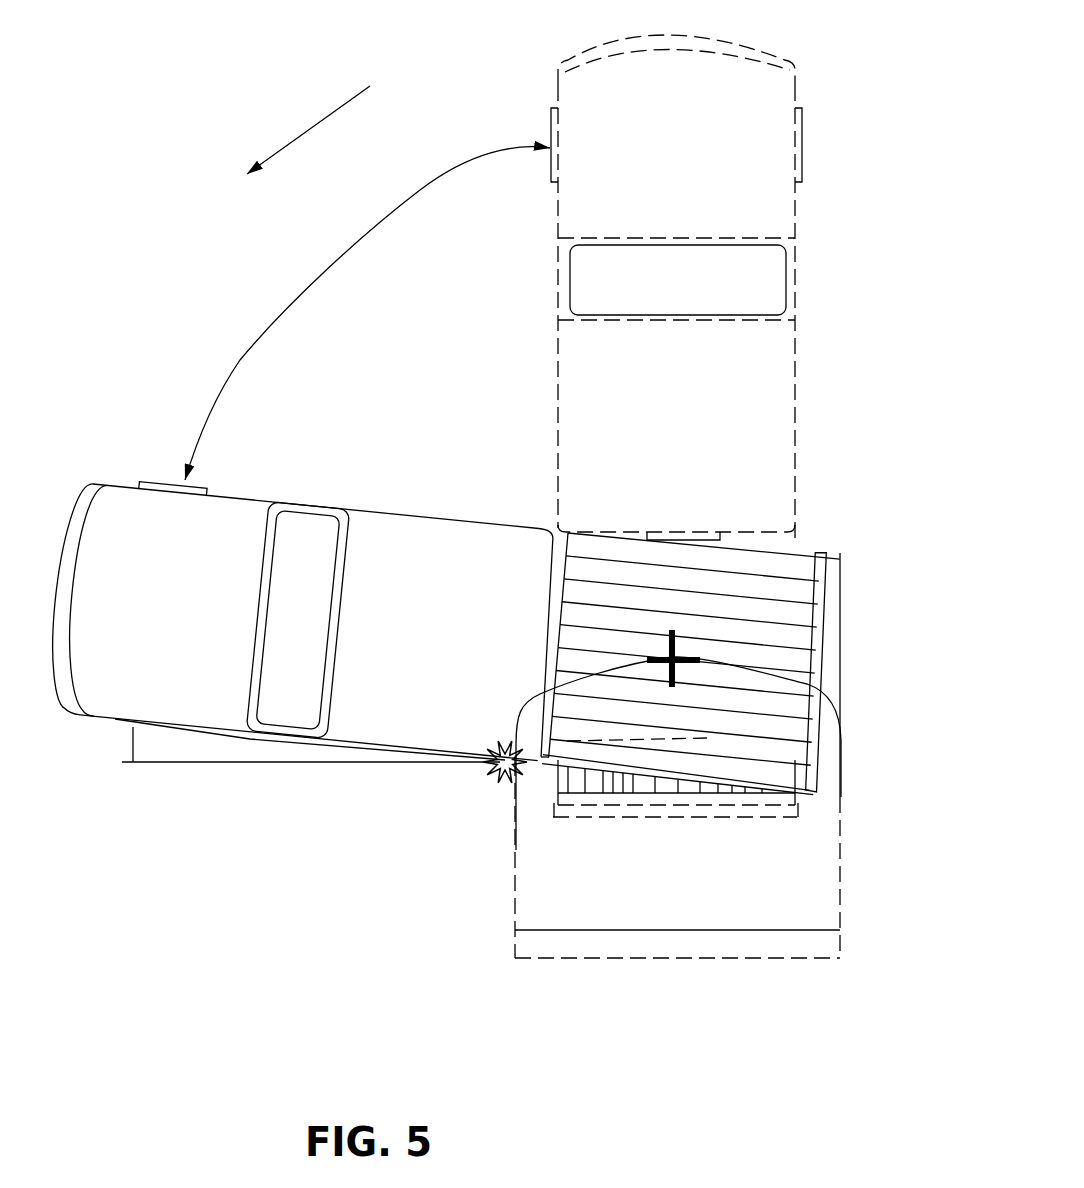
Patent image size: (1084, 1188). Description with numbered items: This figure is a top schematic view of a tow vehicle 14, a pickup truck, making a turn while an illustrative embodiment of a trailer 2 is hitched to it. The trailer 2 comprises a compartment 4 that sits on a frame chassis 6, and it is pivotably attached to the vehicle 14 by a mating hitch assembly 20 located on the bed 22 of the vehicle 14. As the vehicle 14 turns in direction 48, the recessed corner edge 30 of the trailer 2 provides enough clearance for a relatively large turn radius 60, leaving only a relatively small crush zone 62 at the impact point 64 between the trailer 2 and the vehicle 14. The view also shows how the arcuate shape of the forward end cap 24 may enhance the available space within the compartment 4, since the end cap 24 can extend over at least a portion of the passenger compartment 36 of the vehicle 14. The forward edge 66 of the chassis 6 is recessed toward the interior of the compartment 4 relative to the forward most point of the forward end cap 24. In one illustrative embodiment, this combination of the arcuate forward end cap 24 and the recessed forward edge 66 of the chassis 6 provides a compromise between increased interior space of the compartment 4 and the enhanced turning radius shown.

The trailer 2 is at (856, 876).
The compartment 4 is at (550, 903).
The frame chassis 6 is at (532, 961).
The tow vehicle 14 is at (475, 469).
The mating hitch assembly 20 is at (680, 643).
The bed 22 is at (807, 585).
The forward end cap 24 is at (800, 683).
The recessed corner edge 30 is at (537, 767).
The passenger compartment 36 is at (750, 383).
The direction 48 is at (326, 118).
The turn radius 60 is at (362, 230).
The crush zone 62 is at (122, 762).
The impact point 64 is at (500, 772).
The forward edge 66 is at (707, 738).